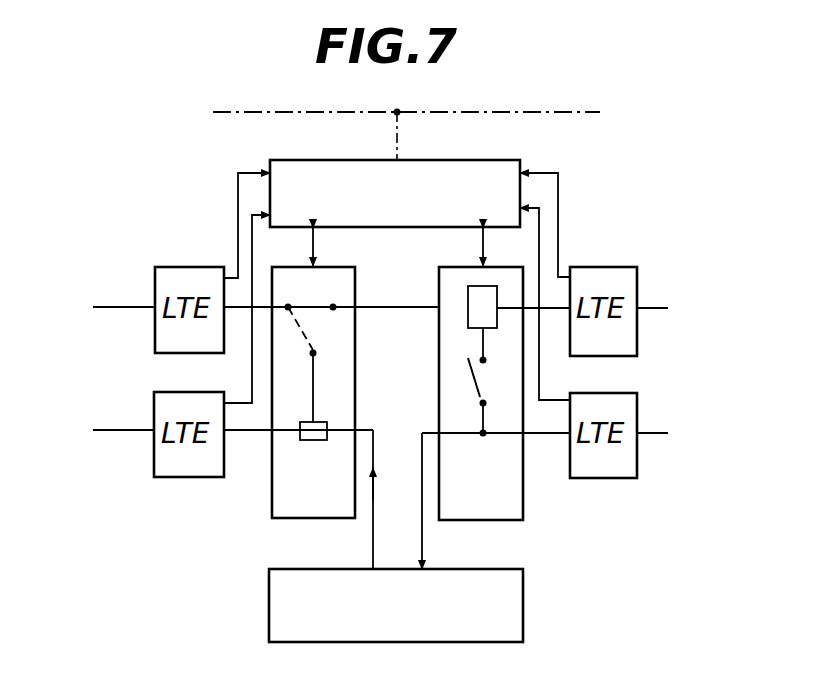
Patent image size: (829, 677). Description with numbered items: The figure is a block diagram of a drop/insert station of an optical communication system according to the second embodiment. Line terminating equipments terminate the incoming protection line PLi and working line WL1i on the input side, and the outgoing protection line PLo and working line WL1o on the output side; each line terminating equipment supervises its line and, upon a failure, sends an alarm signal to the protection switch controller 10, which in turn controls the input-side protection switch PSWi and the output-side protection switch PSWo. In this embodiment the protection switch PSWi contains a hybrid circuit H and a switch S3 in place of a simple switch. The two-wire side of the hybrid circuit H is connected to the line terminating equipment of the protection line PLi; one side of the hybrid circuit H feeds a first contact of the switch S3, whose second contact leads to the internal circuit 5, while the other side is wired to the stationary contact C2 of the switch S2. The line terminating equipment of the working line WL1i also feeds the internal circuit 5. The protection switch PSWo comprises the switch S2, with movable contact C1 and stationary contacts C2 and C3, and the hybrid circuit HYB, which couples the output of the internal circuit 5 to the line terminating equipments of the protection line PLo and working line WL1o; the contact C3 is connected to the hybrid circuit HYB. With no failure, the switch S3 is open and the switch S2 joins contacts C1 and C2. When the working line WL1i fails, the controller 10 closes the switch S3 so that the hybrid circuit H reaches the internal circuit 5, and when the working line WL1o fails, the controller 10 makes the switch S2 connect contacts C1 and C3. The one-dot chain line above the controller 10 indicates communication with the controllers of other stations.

The protection switch controller 10 is at (520, 160).
The internal circuit 5 is at (523, 605).
The switch S2 is at (288, 343).
The switch S3 is at (498, 383).
The movable contact C1 is at (289, 294).
The stationary contact C2 is at (334, 294).
The stationary contact C3 is at (327, 342).
The hybrid circuit H is at (482, 307).
The hybrid circuit HYB is at (313, 441).
The protection switch PSWo is at (302, 417).
The protection switch PSWi is at (487, 417).
The protection line PLo is at (258, 285).
The protection line PLi is at (598, 285).
The working line WL1o is at (130, 445).
The working line WL1i is at (569, 459).